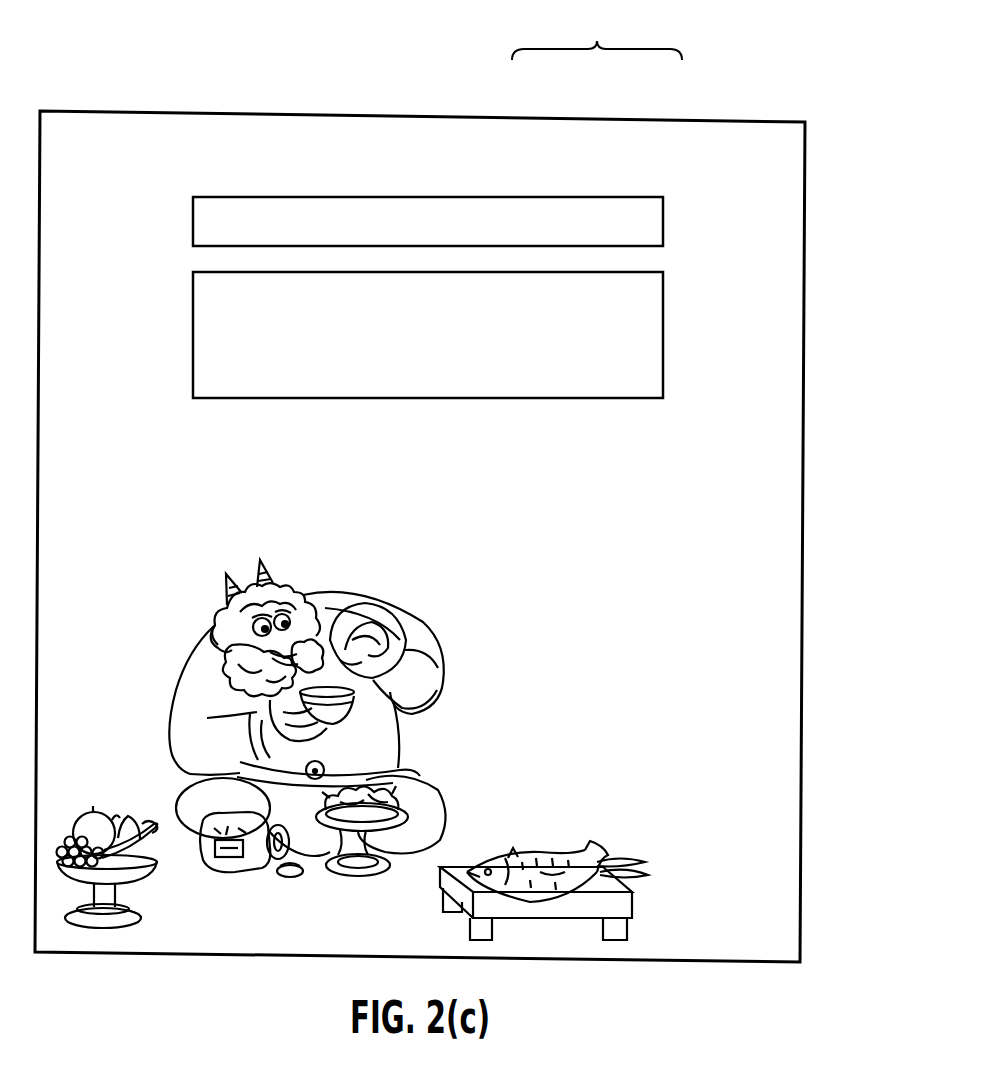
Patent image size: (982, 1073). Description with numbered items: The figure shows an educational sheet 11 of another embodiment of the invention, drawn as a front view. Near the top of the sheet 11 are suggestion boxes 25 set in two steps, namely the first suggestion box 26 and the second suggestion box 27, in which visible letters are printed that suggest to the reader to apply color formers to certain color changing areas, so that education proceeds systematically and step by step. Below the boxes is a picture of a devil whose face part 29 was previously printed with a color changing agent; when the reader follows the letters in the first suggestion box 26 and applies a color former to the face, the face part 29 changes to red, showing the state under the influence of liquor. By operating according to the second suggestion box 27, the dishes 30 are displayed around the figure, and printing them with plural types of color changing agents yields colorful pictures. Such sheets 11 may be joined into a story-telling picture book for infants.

The educational sheet 11 is at (718, 937).
The suggestion boxes 25 is at (597, 31).
The first suggestion box 26 is at (672, 290).
The second suggestion box 27 is at (541, 188).
The face part 29 is at (227, 667).
The dishes 30 is at (150, 897).